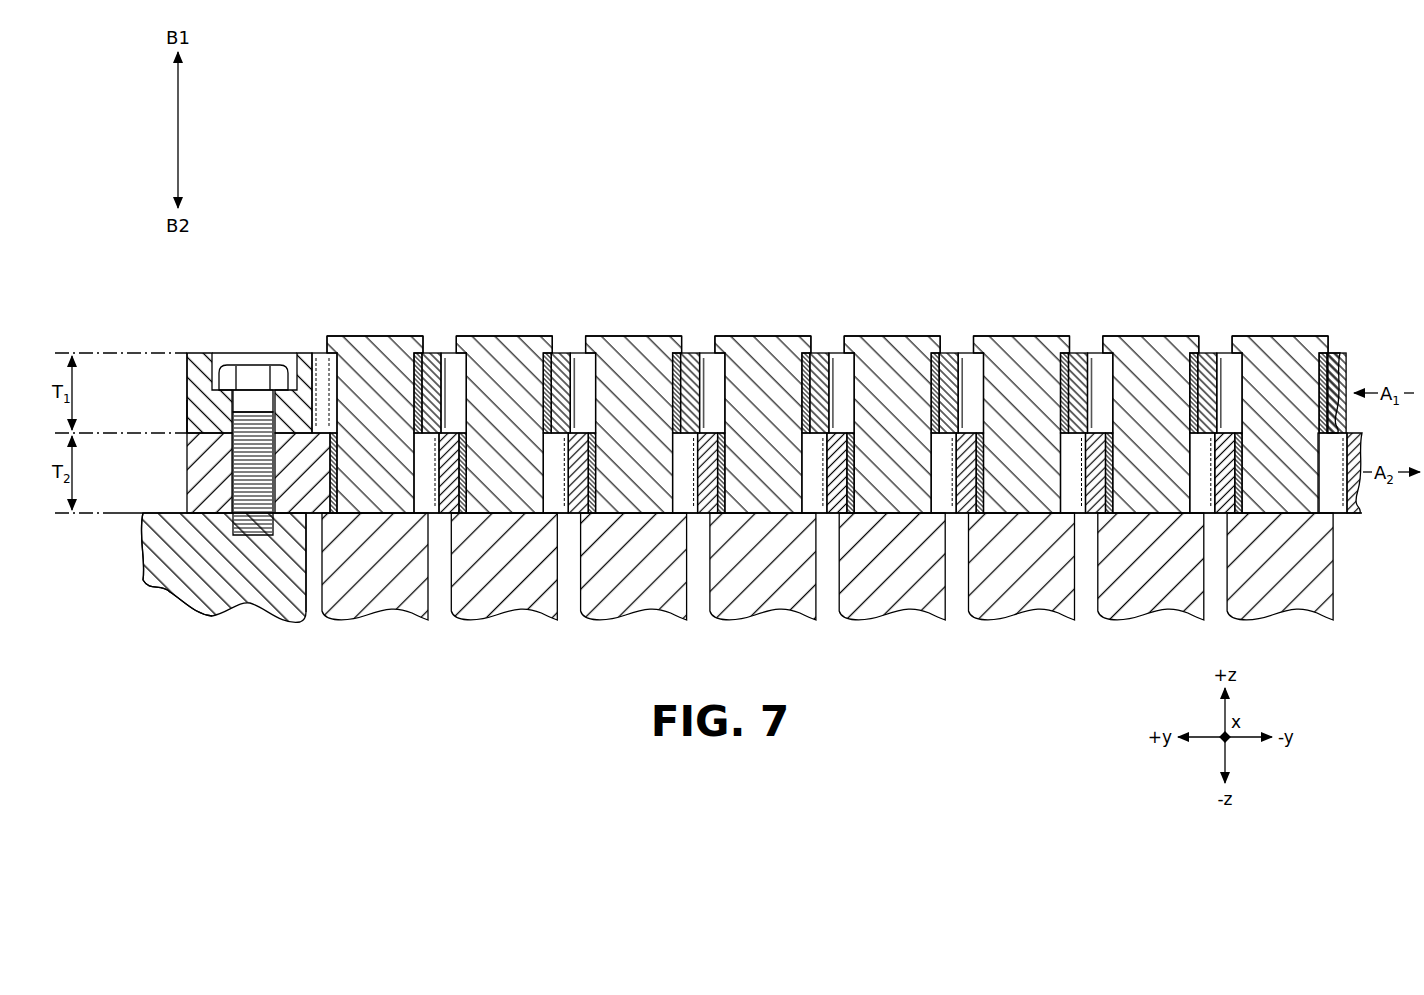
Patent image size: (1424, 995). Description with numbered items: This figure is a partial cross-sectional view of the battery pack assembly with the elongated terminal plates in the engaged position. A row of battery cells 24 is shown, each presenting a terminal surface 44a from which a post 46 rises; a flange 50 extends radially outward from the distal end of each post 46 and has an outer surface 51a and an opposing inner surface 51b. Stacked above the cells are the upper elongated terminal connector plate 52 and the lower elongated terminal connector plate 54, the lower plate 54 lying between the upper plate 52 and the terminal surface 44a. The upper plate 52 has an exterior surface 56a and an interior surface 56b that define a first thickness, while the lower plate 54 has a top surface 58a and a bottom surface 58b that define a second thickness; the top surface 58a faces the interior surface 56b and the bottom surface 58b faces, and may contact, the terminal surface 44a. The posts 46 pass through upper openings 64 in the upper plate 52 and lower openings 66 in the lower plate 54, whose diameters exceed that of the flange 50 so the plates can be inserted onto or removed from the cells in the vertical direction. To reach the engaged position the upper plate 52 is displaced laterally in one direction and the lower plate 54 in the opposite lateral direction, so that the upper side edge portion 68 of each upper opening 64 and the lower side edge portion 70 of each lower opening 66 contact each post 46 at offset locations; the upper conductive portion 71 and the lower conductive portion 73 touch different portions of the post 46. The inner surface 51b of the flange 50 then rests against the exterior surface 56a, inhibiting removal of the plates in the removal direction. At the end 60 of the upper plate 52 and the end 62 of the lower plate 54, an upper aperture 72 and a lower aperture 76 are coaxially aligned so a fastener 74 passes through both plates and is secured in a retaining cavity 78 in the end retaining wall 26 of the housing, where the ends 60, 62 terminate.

The battery cells 24 is at (462, 672).
The end retaining wall 26 is at (200, 615).
The terminal surface 44a is at (627, 548).
The post 46 is at (349, 350).
The flange 50 is at (827, 301).
The outer surface 51a is at (832, 297).
The inner surface 51b is at (891, 331).
The upper elongated terminal connector plate 52 is at (1341, 366).
The lower elongated terminal connector plate 54 is at (1360, 500).
The exterior surface 56a is at (203, 352).
The interior surface 56b is at (187, 445).
The top surface 58a is at (187, 418).
The bottom surface 58b is at (152, 584).
The end 60 is at (187, 372).
The end 62 is at (150, 515).
The upper opening 64 is at (837, 393).
The lower opening 66 is at (845, 473).
The upper side edge portion 68 is at (808, 393).
The lower side edge portion 70 is at (334, 490).
The upper conductive portion 71 is at (878, 355).
The upper aperture 72 is at (290, 352).
The lower conductive portion 73 is at (811, 497).
The fastener 74 is at (255, 392).
The lower aperture 76 is at (307, 516).
The retaining cavity 78 is at (270, 520).